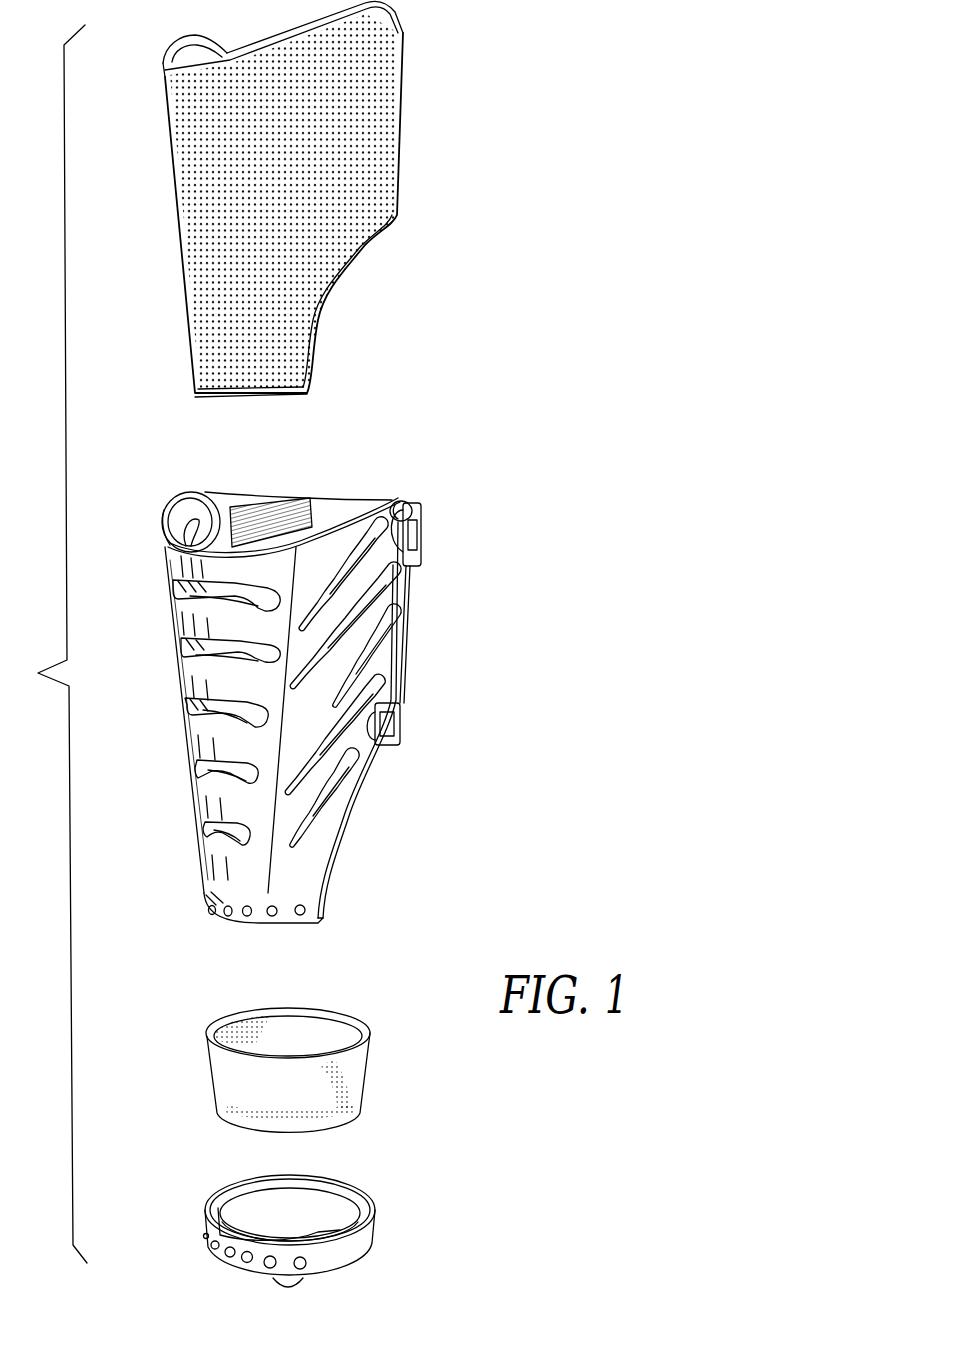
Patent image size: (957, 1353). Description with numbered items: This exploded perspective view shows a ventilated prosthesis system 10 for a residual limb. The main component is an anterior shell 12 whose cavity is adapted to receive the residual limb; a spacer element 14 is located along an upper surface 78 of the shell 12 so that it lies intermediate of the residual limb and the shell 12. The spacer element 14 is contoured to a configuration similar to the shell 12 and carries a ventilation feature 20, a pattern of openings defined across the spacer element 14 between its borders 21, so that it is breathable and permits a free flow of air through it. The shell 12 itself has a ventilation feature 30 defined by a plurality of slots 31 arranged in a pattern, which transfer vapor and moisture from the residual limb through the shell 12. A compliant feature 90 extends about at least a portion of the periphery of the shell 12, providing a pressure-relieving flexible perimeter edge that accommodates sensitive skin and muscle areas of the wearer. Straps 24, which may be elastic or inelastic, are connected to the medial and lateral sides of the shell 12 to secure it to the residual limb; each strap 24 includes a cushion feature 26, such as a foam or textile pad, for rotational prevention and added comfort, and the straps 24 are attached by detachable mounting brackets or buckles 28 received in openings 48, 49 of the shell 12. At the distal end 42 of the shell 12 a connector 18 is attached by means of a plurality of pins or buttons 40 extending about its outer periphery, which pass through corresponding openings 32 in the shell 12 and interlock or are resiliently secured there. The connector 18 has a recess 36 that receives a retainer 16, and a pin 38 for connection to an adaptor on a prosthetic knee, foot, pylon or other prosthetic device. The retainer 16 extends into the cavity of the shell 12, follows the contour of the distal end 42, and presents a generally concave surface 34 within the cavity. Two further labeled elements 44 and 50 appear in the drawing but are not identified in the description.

The prosthesis system 10 is at (43, 644).
The anterior shell 12 is at (413, 582).
The spacer element 14 is at (399, 172).
The retainer 16 is at (200, 1072).
The connector 18 is at (196, 1223).
The ventilation feature 20 is at (338, 262).
The borders 21 is at (322, 373).
The straps 24 is at (287, 508).
The cushion feature 26 is at (347, 500).
The buckles 28 is at (414, 556).
The ventilation feature 30 is at (355, 758).
The slots 31 is at (340, 778).
The openings 32 is at (305, 910).
The concave surface 34 is at (240, 1043).
The recess 36 is at (325, 1197).
The pin 38 is at (283, 1288).
The buttons 40 is at (307, 1263).
The distal end 42 is at (227, 890).
The liner outer surface 44 is at (377, 70).
The opening 48 is at (405, 503).
The opening 49 is at (222, 515).
The buckle 50 is at (411, 520).
The upper surface 78 is at (210, 507).
The compliant feature 90 is at (163, 517).